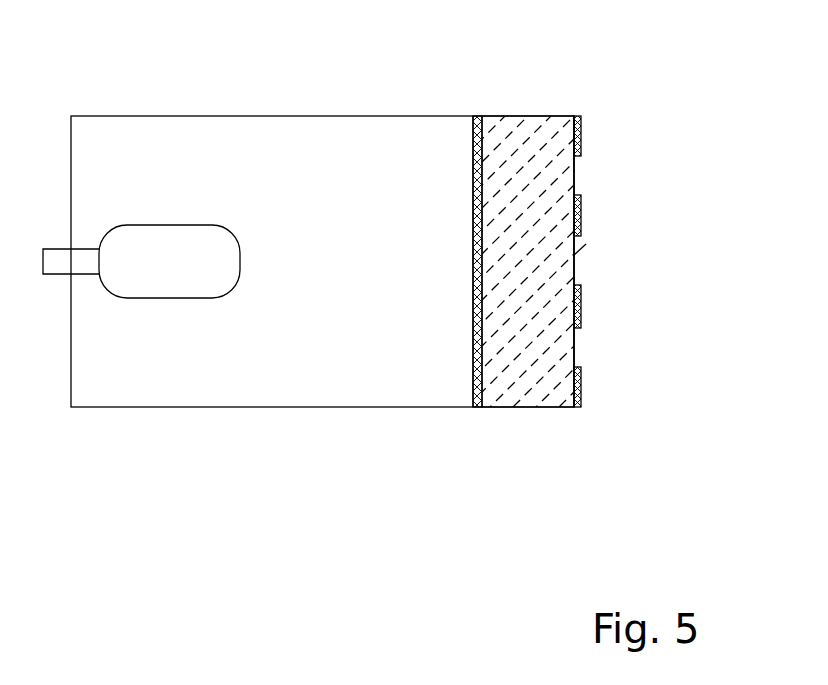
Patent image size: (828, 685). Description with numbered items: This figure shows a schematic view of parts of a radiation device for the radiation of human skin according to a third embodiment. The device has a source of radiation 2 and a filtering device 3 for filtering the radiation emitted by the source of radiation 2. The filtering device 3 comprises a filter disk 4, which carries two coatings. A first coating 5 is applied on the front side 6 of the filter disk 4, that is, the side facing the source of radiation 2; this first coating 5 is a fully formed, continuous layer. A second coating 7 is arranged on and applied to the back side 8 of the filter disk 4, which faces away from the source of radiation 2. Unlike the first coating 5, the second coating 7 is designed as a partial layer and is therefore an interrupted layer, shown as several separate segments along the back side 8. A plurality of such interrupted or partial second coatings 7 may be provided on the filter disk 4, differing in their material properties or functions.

The source of radiation 2 is at (172, 190).
The filtering device 3 is at (509, 261).
The filter disk 4 is at (529, 438).
The first coating 5 is at (480, 116).
The front side 6 is at (473, 157).
The second coating 7 is at (581, 140).
The back side 8 is at (574, 256).